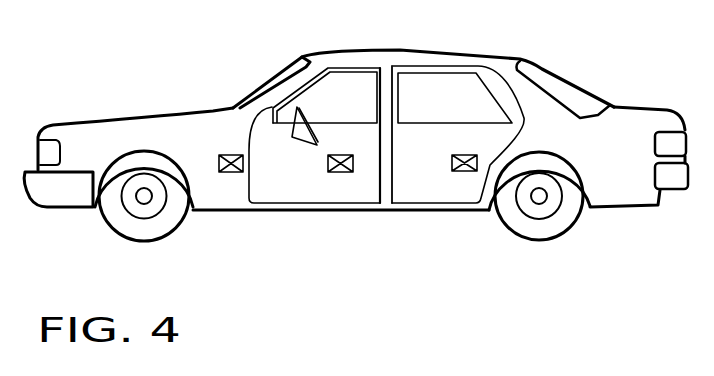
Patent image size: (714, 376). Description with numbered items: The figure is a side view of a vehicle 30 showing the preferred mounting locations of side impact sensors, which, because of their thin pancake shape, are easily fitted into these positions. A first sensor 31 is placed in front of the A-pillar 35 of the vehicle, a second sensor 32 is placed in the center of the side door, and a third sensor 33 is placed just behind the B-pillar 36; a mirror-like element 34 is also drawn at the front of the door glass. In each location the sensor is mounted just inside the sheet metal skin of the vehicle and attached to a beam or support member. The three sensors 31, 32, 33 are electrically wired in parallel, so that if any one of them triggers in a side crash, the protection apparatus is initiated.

The vehicle roof 30 is at (393, 58).
The side impact sensor in front of the A-pillar 31 is at (235, 172).
The side impact sensor in the center of the side door 32 is at (343, 172).
The side impact sensor behind the B-pillar 33 is at (468, 171).
The side mirror 34 is at (311, 130).
The front pillar 35 is at (287, 92).
The center pillar 36 is at (388, 126).